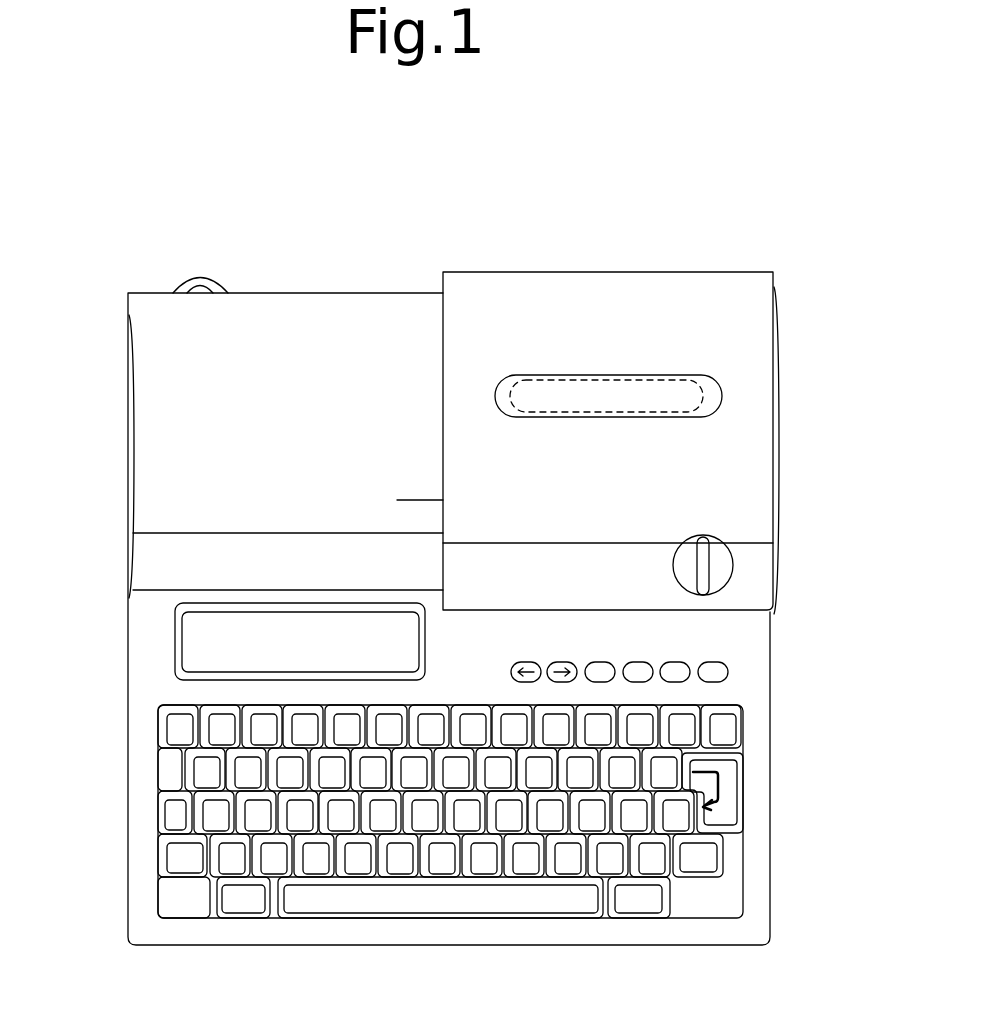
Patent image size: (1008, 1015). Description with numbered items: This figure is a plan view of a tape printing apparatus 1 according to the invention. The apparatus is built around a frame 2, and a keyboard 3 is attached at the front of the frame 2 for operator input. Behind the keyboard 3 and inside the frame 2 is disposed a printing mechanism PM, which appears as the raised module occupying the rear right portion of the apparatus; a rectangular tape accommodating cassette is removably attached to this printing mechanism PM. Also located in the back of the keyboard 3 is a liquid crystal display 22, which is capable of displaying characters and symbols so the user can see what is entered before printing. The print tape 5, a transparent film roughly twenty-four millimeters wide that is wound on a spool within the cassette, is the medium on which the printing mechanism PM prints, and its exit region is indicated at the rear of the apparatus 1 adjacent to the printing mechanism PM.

The tape printing apparatus 1 is at (809, 307).
The frame 2 is at (777, 430).
The keyboard 3 is at (325, 918).
The print tape 5 is at (414, 500).
The liquid crystal display 22 is at (190, 632).
The printing mechanism PM is at (487, 305).